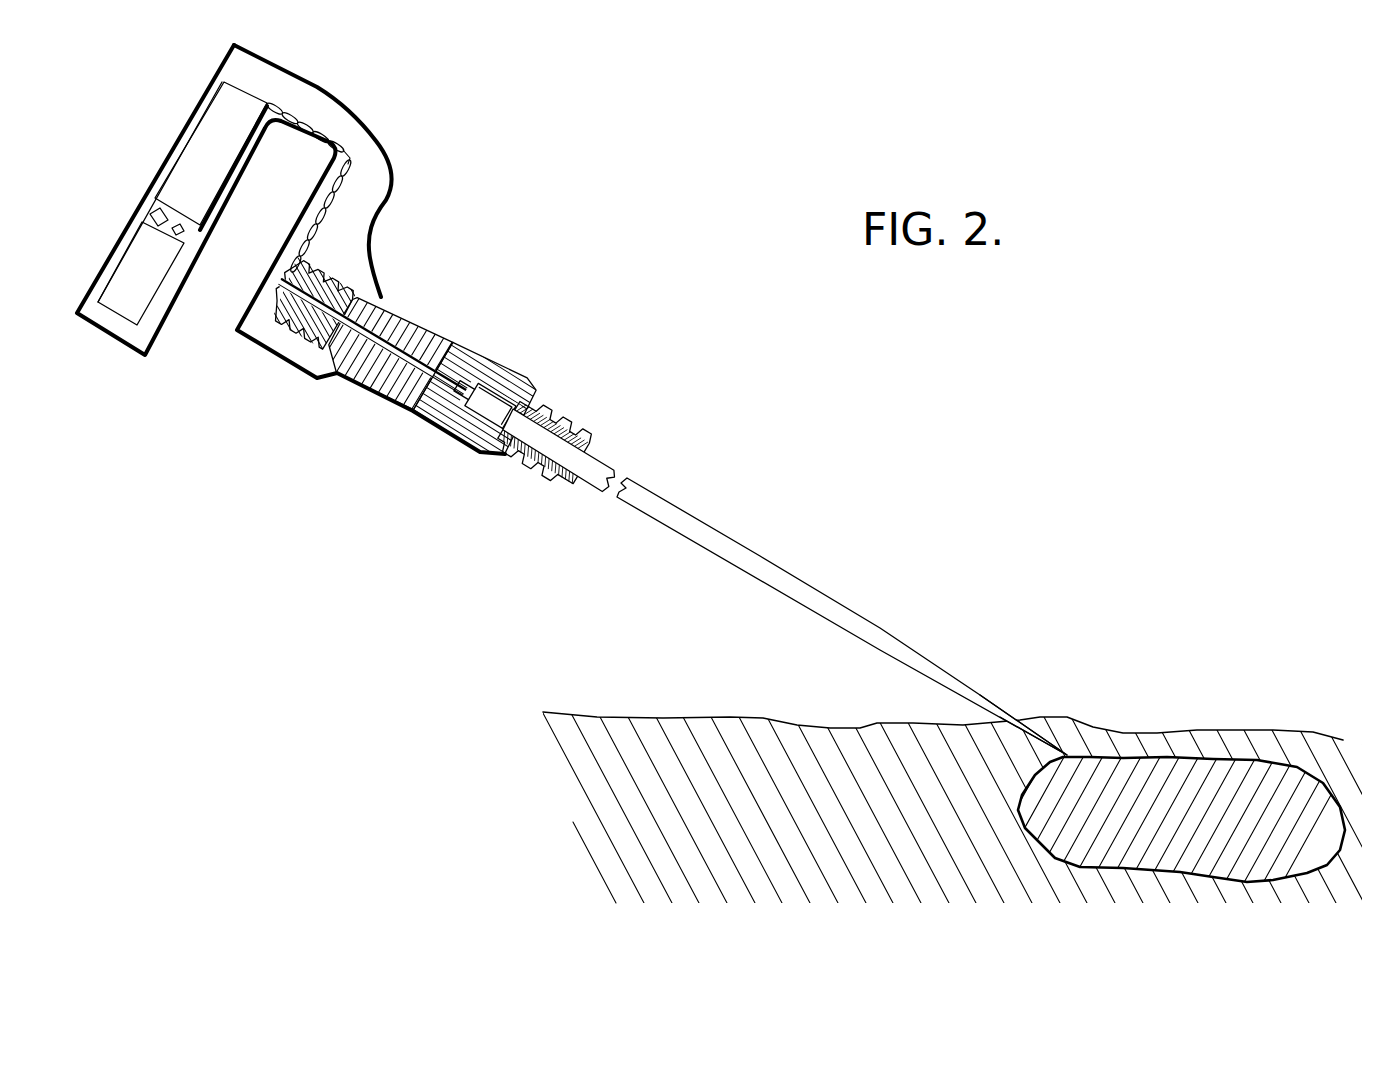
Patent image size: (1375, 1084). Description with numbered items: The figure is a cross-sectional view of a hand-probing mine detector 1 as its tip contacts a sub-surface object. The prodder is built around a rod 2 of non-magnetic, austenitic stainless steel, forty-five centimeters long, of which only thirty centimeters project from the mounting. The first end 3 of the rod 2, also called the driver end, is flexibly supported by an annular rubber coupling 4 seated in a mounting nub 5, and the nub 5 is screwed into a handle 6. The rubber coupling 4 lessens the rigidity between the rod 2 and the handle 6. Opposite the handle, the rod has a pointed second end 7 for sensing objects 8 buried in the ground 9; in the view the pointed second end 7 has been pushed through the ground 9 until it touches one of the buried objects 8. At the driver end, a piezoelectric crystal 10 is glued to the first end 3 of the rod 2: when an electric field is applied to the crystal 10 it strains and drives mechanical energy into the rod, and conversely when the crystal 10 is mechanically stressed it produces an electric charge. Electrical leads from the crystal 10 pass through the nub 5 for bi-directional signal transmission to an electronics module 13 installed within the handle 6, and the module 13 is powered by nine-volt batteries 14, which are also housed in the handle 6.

The hand-probing mine detector 1 is at (656, 354).
The rod 2 is at (782, 580).
The first end 3 is at (581, 460).
The annular rubber coupling 4 is at (568, 422).
The mounting nub 5 is at (490, 363).
The handle 6 is at (373, 198).
The pointed second end 7 is at (998, 703).
The objects 8 is at (1247, 777).
The ground 9 is at (730, 722).
The piezoelectric crystal 10 is at (490, 415).
The electronics module 13 is at (185, 165).
The batteries 14 is at (125, 268).